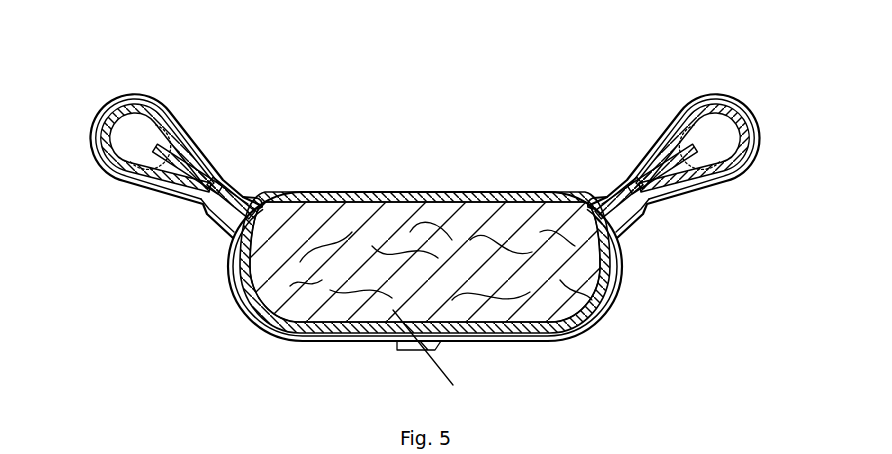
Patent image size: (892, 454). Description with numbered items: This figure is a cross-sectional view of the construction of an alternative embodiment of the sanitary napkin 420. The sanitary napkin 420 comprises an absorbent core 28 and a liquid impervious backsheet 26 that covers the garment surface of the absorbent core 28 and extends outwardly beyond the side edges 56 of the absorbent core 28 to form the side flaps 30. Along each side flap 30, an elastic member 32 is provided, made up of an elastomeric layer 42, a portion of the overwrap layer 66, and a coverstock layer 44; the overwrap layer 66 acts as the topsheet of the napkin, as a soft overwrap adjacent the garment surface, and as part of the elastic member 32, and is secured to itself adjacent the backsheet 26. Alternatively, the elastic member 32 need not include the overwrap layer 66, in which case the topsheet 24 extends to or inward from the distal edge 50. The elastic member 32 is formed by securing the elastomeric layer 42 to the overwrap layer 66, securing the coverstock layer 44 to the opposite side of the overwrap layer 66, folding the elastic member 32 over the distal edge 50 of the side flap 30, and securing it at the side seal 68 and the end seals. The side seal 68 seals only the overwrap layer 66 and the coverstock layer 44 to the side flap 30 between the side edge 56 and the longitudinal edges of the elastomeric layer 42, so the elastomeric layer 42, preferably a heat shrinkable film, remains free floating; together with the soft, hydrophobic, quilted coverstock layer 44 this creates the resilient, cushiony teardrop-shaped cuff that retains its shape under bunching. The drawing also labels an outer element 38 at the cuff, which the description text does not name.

The sanitary napkin 420 is at (422, 203).
The topsheet 24 is at (425, 260).
The overwrap layer 66 is at (418, 202).
The liquid impervious backsheet 26 is at (350, 335).
The absorbent core 28 is at (437, 369).
The side flap 30 is at (203, 212).
The elastic member 32 is at (422, 142).
The outer loop wall 38 is at (103, 112).
The elastomeric layer 42 is at (140, 193).
The coverstock layer 44 is at (115, 180).
The distal edge 50 is at (157, 148).
The side edge 56 is at (248, 278).
The side seal 68 is at (230, 186).